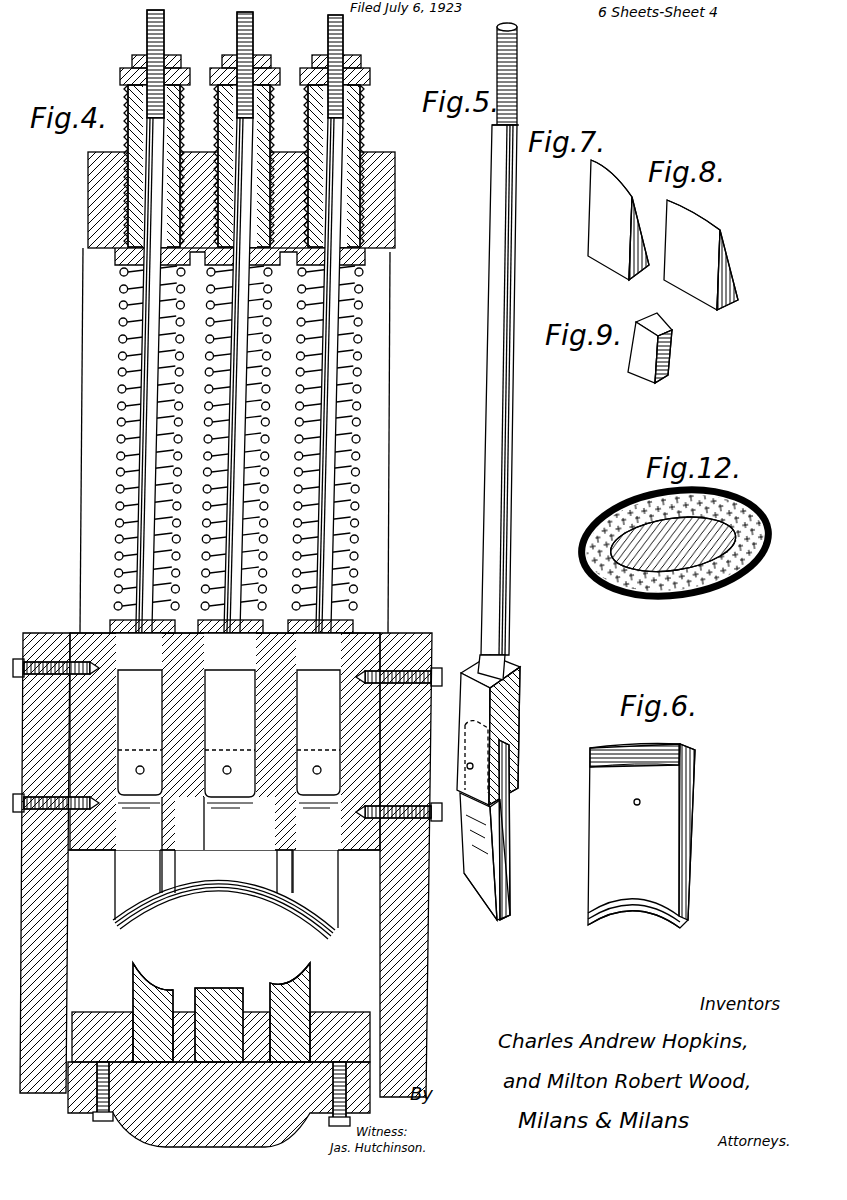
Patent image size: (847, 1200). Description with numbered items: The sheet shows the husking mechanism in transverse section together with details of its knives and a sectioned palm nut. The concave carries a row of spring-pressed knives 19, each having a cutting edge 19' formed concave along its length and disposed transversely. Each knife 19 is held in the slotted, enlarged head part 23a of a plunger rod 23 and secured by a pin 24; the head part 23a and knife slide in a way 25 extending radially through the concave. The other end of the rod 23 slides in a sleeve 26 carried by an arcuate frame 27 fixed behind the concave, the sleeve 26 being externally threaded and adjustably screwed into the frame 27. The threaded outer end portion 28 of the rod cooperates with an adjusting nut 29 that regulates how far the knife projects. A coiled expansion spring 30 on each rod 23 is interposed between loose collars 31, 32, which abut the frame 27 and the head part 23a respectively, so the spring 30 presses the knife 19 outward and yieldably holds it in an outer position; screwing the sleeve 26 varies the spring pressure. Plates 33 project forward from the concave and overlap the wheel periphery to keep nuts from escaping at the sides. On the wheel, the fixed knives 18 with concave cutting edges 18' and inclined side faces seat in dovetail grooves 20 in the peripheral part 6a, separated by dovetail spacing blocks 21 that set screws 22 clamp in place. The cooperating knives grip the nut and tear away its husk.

In FIG. 4, the peripheral part of the wheel member 6a is at (219, 1104).
In FIG. 4, the knife of the wheel member 18 is at (239, 1012).
In FIG. 7, the knife of the wheel member 18 is at (600, 220).
In FIG. 8, the knife of the wheel member 18 is at (717, 255).
In FIG. 4, the cutting edge of wheel knife 18' is at (221, 962).
In FIG. 7, the cutting edge of wheel knife 18' is at (629, 180).
In FIG. 8, the cutting edge of wheel knife 18' is at (692, 211).
In FIG. 4, the knife of the concave 19 is at (222, 883).
In FIG. 5, the knife of the concave 19 is at (499, 830).
In FIG. 6, the knife of the concave 19 is at (641, 836).
In FIG. 4, the cutting edge of concave knife 19' is at (224, 909).
In FIG. 5, the cutting edge of concave knife 19' is at (496, 911).
In FIG. 6, the cutting edge of concave knife 19' is at (634, 926).
In FIG. 4, the dovetail groove 20 is at (320, 1062).
In FIG. 4, the spacing block 21 is at (90, 1020).
In FIG. 9, the spacing block 21 is at (667, 362).
In FIG. 4, the set screw 22 is at (92, 1120).
In FIG. 4, the plunger rod 23 is at (140, 470).
In FIG. 5, the plunger rod 23 is at (510, 458).
In FIG. 4, the head part of plunger rod 23a is at (229, 739).
In FIG. 5, the head part of plunger rod 23a is at (514, 723).
In FIG. 4, the pin 24 is at (143, 768).
In FIG. 5, the pin 24 is at (474, 766).
In FIG. 4, the way 25 is at (160, 748).
In FIG. 5, the way 25 is at (476, 757).
In FIG. 4, the sleeve 26 is at (178, 132).
In FIG. 4, the arcuate frame 27 is at (384, 231).
In FIG. 4, the threaded outer end portion of rod 28 is at (326, 40).
In FIG. 5, the threaded outer end portion of rod 28 is at (496, 52).
In FIG. 4, the adjusting nut 29 is at (131, 61).
In FIG. 4, the coiled expansion spring 30 is at (118, 406).
In FIG. 4, the loose collar 31 is at (115, 263).
In FIG. 4, the loose collar 32 is at (110, 622).
In FIG. 4, the plate 33 is at (60, 928).